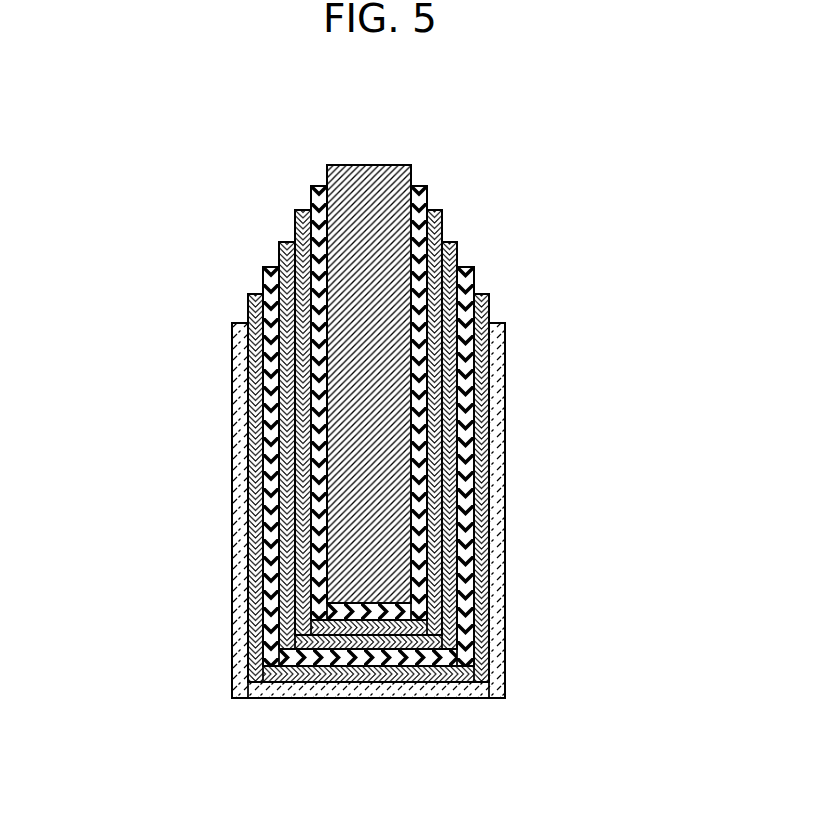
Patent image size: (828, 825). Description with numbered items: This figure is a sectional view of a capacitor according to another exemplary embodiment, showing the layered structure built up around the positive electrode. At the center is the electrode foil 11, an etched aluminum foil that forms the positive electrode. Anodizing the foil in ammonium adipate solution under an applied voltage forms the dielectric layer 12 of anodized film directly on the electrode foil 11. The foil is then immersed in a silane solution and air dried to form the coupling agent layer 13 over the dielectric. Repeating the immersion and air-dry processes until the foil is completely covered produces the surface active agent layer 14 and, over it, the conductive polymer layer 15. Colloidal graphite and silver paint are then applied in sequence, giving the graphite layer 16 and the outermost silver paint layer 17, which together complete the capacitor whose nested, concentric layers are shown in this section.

The electrode foil 11 is at (372, 190).
The dielectric layer 12 is at (312, 190).
The coupling agent layer 13 is at (443, 217).
The surface active agent layer 14 is at (282, 253).
The conductive polymer layer 15 is at (475, 277).
The graphite layer 16 is at (248, 312).
The silver paint layer 17 is at (497, 447).